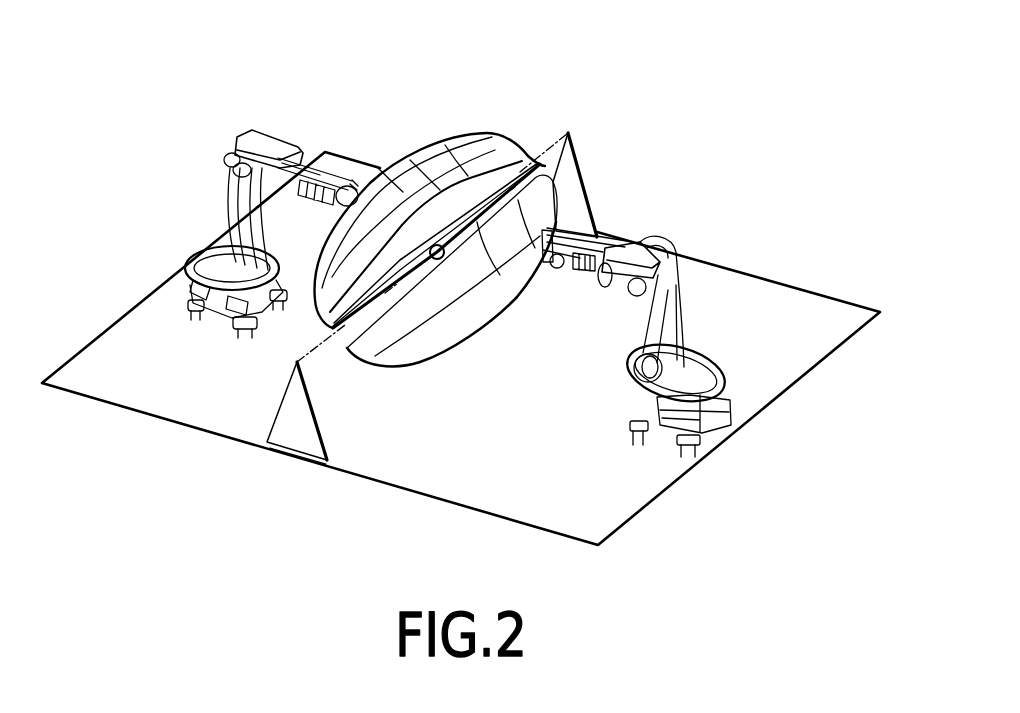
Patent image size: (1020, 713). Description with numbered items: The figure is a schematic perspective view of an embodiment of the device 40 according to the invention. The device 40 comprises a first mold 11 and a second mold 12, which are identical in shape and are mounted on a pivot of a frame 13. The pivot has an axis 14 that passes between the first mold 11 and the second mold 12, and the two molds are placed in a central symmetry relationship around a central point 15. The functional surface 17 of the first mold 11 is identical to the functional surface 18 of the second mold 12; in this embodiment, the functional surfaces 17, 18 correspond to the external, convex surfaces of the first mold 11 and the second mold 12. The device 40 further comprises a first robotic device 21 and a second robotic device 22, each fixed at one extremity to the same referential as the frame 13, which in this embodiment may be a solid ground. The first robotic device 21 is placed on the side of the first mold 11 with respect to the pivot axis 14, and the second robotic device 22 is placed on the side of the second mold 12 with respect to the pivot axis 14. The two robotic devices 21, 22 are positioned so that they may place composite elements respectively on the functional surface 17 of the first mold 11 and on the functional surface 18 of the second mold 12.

The first mold 11 is at (432, 136).
The second mold 12 is at (511, 322).
The frame 13 is at (578, 181).
The axis 14 is at (340, 335).
The central point 15 is at (439, 260).
The functional surface 17 is at (376, 167).
The functional surface 18 is at (468, 333).
The first robotic device 21 is at (216, 200).
The second robotic device 22 is at (689, 308).
The device 40 is at (551, 95).